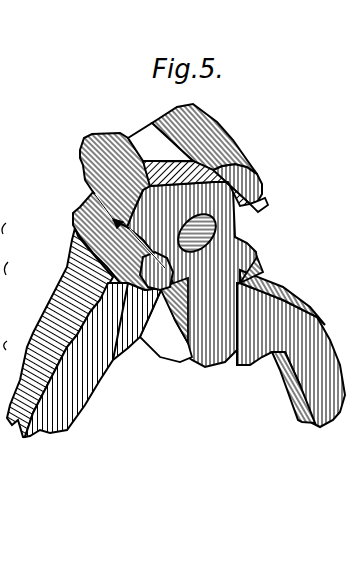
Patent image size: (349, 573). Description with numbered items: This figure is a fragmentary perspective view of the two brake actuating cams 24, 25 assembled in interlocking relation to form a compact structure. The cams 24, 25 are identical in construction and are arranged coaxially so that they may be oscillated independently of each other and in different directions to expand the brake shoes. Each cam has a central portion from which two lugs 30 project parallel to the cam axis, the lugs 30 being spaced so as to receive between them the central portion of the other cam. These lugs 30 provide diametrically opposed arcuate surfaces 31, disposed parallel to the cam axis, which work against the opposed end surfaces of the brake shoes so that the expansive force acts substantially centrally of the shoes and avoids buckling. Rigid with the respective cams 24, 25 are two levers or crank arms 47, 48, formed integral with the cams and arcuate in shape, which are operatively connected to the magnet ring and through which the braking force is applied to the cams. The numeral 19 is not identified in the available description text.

The central body 19 is at (194, 340).
The cam 24 is at (183, 177).
The cam 25 is at (165, 124).
The lug 30 is at (110, 137).
The arcuate surface 31 is at (86, 176).
The crank arm 47 is at (332, 418).
The crank arm 48 is at (54, 410).